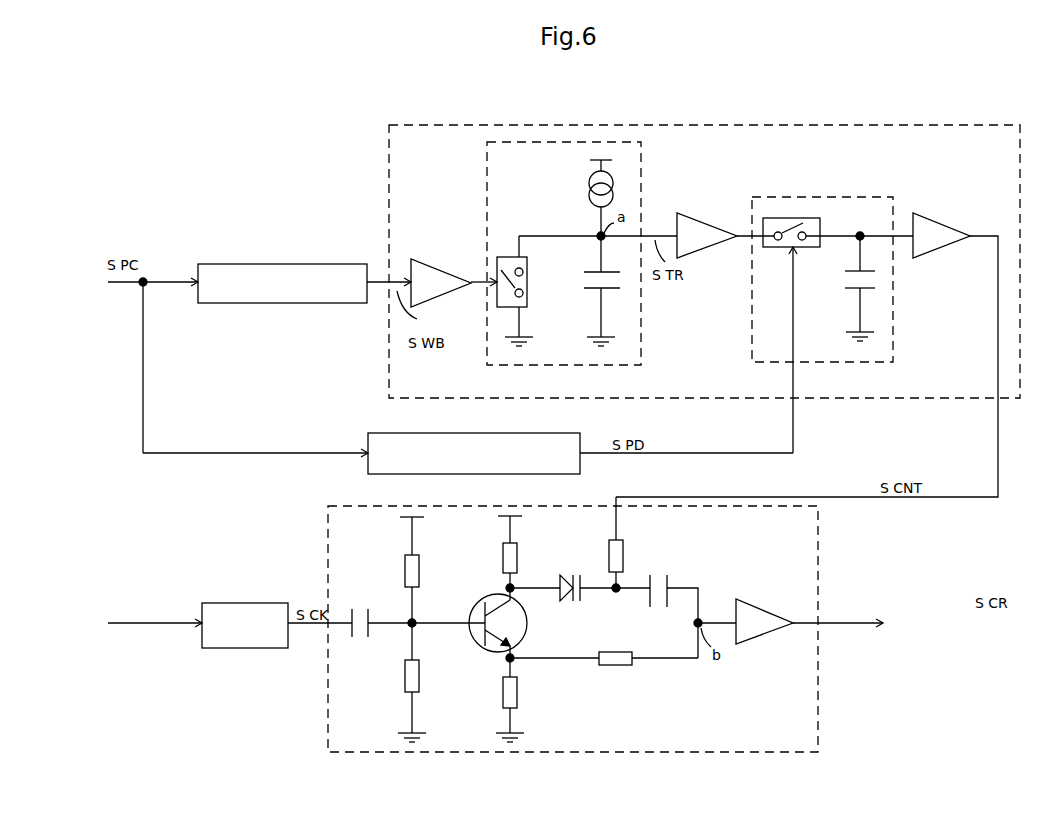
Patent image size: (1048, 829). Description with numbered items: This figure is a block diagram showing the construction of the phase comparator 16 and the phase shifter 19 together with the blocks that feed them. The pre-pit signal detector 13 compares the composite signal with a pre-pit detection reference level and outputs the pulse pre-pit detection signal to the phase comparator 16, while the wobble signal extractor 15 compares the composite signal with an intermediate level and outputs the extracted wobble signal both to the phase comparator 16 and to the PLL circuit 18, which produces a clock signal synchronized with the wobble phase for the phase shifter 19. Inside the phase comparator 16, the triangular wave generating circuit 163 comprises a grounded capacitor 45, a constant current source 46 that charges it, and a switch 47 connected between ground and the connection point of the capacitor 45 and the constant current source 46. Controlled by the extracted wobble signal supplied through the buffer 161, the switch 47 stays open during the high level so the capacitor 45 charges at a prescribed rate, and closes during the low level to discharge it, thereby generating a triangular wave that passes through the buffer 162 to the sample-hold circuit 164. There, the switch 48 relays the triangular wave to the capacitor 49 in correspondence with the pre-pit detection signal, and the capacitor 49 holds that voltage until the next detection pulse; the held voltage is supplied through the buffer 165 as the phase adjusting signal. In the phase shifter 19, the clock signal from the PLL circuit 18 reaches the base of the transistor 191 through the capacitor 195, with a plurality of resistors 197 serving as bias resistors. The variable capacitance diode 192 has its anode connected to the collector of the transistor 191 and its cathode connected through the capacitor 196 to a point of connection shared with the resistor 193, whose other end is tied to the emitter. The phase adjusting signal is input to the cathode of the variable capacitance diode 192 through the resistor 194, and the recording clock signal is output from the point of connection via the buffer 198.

The pre-pit signal detector 13 is at (368, 438).
The wobble signal extractor 15 is at (250, 264).
The phase comparator 16 is at (389, 180).
The PLL circuit 18 is at (235, 602).
The phase shifter 19 is at (748, 753).
The capacitor 45 is at (592, 282).
The constant current source 46 is at (589, 188).
The switch 47 is at (528, 300).
The switch 48 is at (775, 247).
The capacitor 49 is at (846, 283).
The buffer 161 is at (440, 270).
The buffer 162 is at (704, 222).
The triangular wave generating circuit 163 is at (488, 222).
The sample-hold circuit 164 is at (834, 202).
The buffer 165 is at (948, 228).
The transistor 191 is at (479, 600).
The variable capacitance diode 192 is at (569, 575).
The resistor 193 is at (617, 666).
The resistor 194 is at (624, 556).
The capacitor 195 is at (363, 640).
The capacitor 196 is at (672, 576).
The resistors 197 is at (405, 562).
The buffer 198 is at (762, 636).